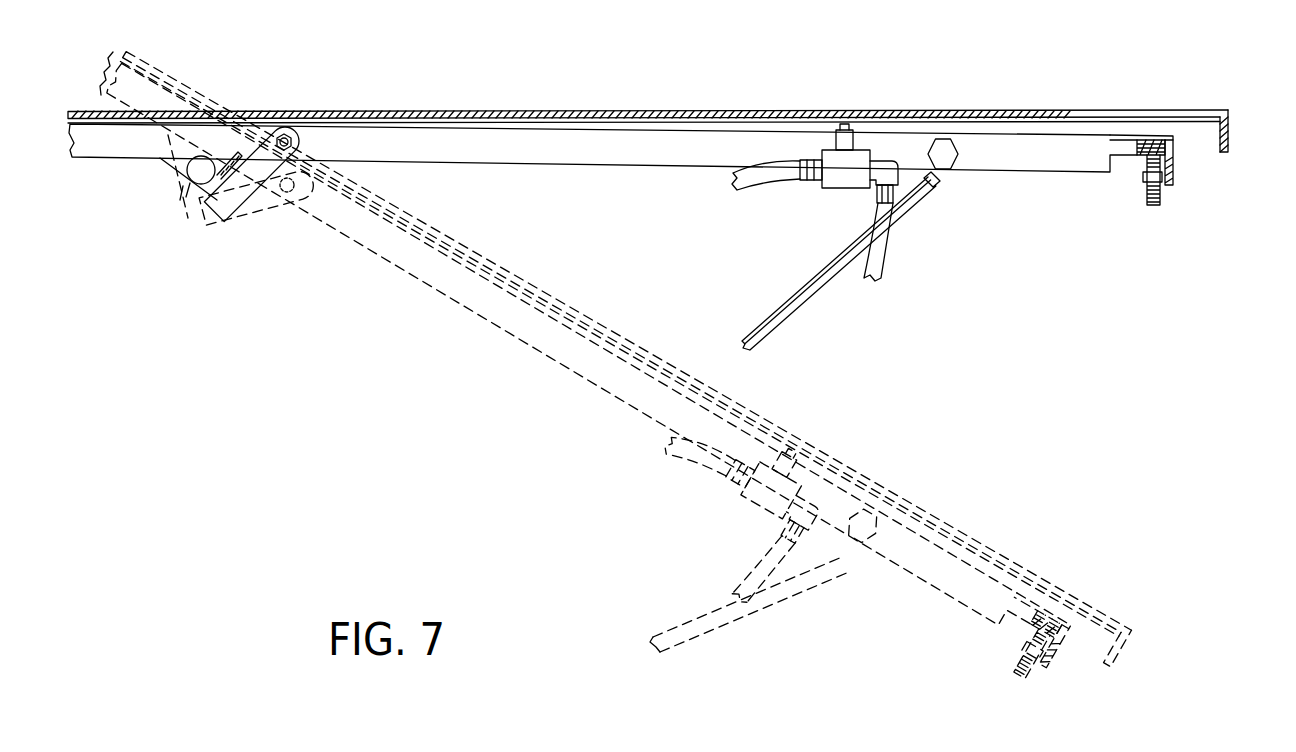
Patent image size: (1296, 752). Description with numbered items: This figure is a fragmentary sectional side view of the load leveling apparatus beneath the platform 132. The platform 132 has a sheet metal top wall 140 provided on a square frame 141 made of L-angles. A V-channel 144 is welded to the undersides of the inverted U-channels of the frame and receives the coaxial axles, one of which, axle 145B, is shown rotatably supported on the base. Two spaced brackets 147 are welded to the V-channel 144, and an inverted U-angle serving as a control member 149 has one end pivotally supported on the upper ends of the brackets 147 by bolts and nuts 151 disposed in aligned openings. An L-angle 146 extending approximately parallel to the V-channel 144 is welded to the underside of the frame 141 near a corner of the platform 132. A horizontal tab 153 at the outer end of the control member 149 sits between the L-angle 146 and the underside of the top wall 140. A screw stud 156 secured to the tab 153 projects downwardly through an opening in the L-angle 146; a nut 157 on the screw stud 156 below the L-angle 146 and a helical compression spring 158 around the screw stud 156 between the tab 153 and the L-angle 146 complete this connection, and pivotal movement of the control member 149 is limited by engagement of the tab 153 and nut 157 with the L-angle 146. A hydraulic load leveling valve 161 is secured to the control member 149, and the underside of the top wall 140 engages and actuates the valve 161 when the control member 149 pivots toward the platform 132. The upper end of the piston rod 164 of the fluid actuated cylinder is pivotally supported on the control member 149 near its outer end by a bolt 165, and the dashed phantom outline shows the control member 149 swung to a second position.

The platform 132 is at (1077, 108).
The sheet metal top wall 140 is at (998, 107).
The square frame 141 is at (1229, 130).
The V-channel 144 is at (195, 174).
The axle 145B is at (188, 195).
The L-angle 146 is at (1174, 165).
The bracket 147 is at (229, 215).
The control member 149 is at (592, 152).
The bolts and nuts 151 is at (287, 135).
The horizontal tab 153 is at (1133, 136).
The screw stud 156 is at (1150, 200).
The nut 157 is at (1144, 177).
The helical compression spring 158 is at (1166, 148).
The hydraulic load leveling valve 161 is at (835, 176).
The piston rod 164 is at (805, 298).
The bolt 165 is at (948, 162).